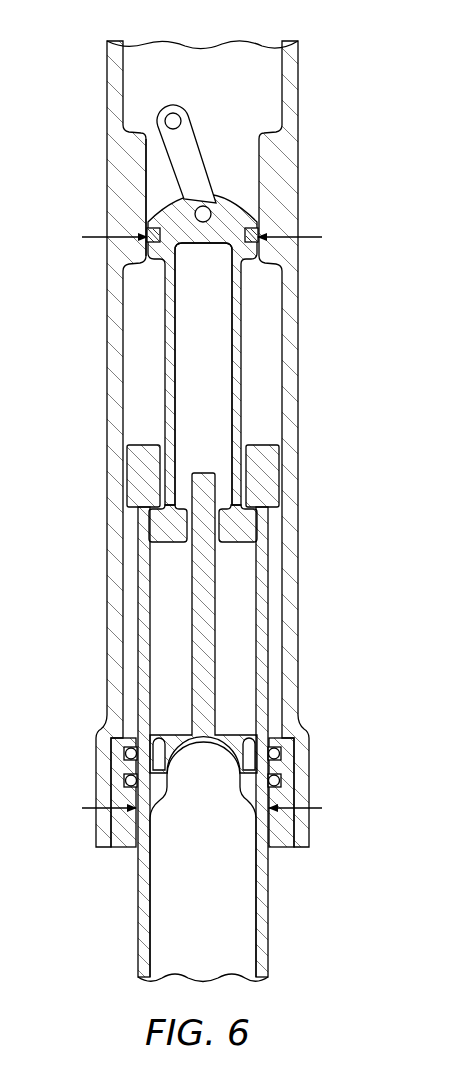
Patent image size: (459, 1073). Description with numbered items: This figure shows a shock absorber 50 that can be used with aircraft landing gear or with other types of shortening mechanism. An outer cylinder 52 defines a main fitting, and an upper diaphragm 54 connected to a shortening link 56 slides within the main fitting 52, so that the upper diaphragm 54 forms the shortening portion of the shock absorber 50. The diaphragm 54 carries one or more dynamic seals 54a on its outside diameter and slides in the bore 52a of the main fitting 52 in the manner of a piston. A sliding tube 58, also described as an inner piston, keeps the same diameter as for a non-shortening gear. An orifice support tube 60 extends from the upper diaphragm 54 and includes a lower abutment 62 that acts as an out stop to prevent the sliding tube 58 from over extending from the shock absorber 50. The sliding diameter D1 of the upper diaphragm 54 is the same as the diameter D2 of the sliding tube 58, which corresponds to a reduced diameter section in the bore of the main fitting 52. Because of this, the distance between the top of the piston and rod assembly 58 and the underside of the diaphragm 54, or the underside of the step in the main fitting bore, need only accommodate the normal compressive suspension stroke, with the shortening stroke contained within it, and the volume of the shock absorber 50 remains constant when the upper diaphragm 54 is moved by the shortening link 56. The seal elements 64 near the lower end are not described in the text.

The shock absorber 50 is at (206, 507).
The outer cylinder 52 is at (175, 444).
The bore 52a is at (150, 182).
The upper diaphragm 54 is at (243, 373).
The dynamic seals 54a is at (163, 245).
The shortening link 56 is at (187, 140).
The sliding tube 58 is at (270, 462).
The orifice support tube 60 is at (237, 357).
The lower abutment 62 is at (170, 534).
The seal 64 is at (283, 847).
The sliding diameter of the upper diaphragm D1 is at (217, 239).
The diameter of the sliding tube D2 is at (217, 810).